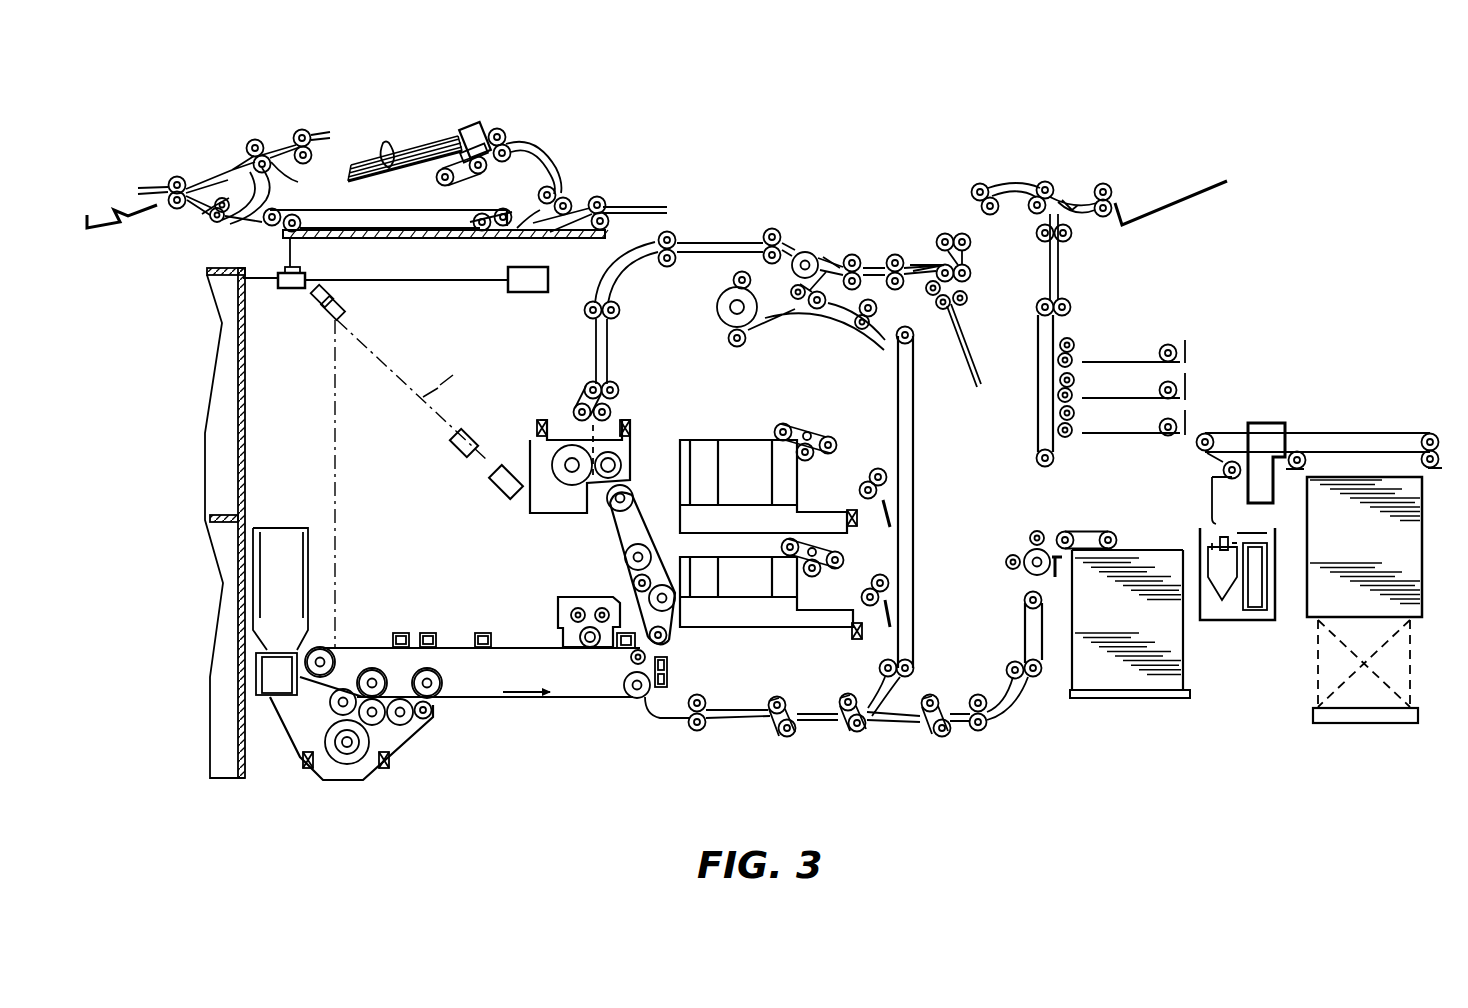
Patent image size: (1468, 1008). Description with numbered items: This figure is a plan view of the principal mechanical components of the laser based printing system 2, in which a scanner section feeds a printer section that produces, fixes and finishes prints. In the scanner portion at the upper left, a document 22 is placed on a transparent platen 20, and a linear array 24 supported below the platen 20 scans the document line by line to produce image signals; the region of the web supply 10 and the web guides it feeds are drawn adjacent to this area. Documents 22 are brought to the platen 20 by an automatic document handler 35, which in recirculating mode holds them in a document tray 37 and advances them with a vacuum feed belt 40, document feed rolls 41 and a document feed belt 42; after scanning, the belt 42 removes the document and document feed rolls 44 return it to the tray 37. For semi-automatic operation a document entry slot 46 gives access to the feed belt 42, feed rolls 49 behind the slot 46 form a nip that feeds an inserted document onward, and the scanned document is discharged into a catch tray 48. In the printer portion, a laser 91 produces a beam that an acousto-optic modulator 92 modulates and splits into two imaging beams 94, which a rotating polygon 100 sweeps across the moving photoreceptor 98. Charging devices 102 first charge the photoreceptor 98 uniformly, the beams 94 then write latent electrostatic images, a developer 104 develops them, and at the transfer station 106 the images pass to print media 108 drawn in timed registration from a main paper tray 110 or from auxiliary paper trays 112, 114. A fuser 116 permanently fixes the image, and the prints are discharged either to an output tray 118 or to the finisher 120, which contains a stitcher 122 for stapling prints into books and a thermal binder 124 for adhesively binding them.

The printing system 2 is at (792, 157).
The web feed station 10 is at (202, 156).
The transparent platen 20 is at (440, 240).
The document 22 is at (380, 142).
The linear array 24 is at (280, 273).
The automatic document handler 35 is at (410, 135).
The document tray 37 is at (388, 171).
The vacuum feed belt 40 is at (488, 168).
The document feed rolls 41 is at (510, 143).
The document feed belt 42 is at (448, 207).
The document feed rolls 44 is at (303, 164).
The document entry slot 46 is at (632, 198).
The catch tray 48 is at (143, 210).
The feed rolls 49 is at (593, 198).
The laser 91 is at (503, 490).
The acousto-optic modulator 92 is at (470, 433).
The imaging beams 94 is at (451, 367).
The photoreceptor 98 is at (513, 647).
The rotating polygon 100 is at (317, 317).
The charging devices 102 is at (428, 632).
The developer 104 is at (417, 733).
The transfer station 106 is at (650, 713).
The print media 108 is at (1173, 650).
The main paper tray 110 is at (1108, 697).
The auxiliary paper tray 112 is at (737, 627).
The auxiliary paper tray 114 is at (733, 443).
The fuser 116 is at (643, 446).
The output tray 118 is at (1200, 192).
The finisher 120 is at (1242, 360).
The stitcher 122 is at (1186, 374).
The thermal binder 124 is at (1341, 422).